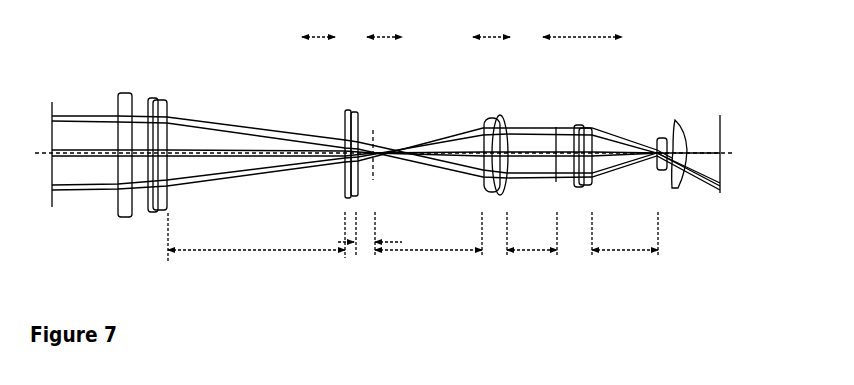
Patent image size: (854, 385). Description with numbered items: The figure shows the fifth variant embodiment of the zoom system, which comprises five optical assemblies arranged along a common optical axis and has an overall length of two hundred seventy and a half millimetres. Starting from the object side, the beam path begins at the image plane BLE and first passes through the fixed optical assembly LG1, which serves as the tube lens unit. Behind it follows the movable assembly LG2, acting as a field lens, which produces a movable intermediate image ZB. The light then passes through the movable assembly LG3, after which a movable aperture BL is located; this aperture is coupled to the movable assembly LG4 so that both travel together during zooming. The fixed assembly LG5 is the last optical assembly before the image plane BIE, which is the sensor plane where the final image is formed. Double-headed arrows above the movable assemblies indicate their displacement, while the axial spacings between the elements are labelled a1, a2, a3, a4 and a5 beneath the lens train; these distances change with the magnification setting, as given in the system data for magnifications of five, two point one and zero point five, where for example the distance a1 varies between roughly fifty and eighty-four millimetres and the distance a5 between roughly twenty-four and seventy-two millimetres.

The image plane BLE is at (58, 102).
The fixed optical assembly LG1 is at (168, 95).
The movable assembly LG2 is at (340, 114).
The movable intermediate image ZB is at (374, 120).
The movable assembly LG3 is at (494, 124).
The movable aperture BL is at (548, 123).
The movable assembly LG4 is at (612, 112).
The fixed assembly LG5 is at (685, 113).
The image plane BIE is at (712, 118).
The distance a1 is at (256, 274).
The distance a2 is at (370, 270).
The distance a3 is at (428, 274).
The distance a4 is at (532, 274).
The distance a5 is at (625, 274).